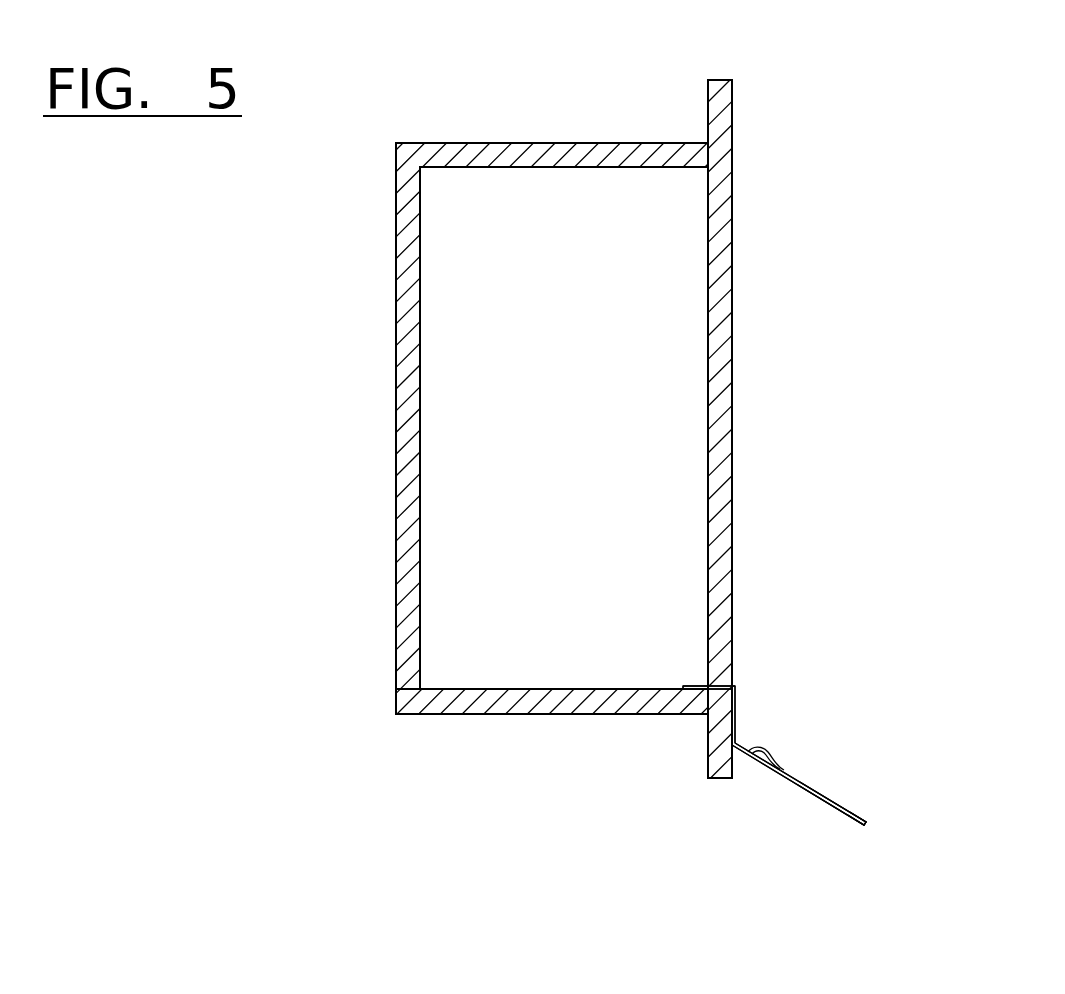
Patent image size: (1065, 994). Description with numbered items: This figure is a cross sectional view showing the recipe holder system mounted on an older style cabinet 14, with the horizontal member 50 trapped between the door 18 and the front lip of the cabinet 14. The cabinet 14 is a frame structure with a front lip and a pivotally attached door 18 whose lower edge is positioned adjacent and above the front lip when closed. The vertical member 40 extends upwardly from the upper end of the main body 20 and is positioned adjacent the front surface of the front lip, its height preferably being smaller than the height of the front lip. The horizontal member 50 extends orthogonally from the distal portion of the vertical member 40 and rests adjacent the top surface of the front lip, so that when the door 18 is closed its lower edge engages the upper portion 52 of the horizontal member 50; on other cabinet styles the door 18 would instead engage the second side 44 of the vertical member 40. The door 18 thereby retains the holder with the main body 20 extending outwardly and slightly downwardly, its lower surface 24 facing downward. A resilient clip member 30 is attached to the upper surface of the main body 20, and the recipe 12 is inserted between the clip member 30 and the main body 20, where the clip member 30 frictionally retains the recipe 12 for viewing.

The cabinet 14 is at (588, 138).
The door 18 is at (733, 373).
The horizontal member 50 is at (662, 699).
The upper portion 52 is at (695, 686).
The second side 44 is at (734, 742).
The vertical member 40 is at (752, 720).
The clip member 30 is at (776, 767).
The lower surface 24 is at (806, 790).
The recipe 12 is at (833, 822).
The main body 20 is at (848, 840).